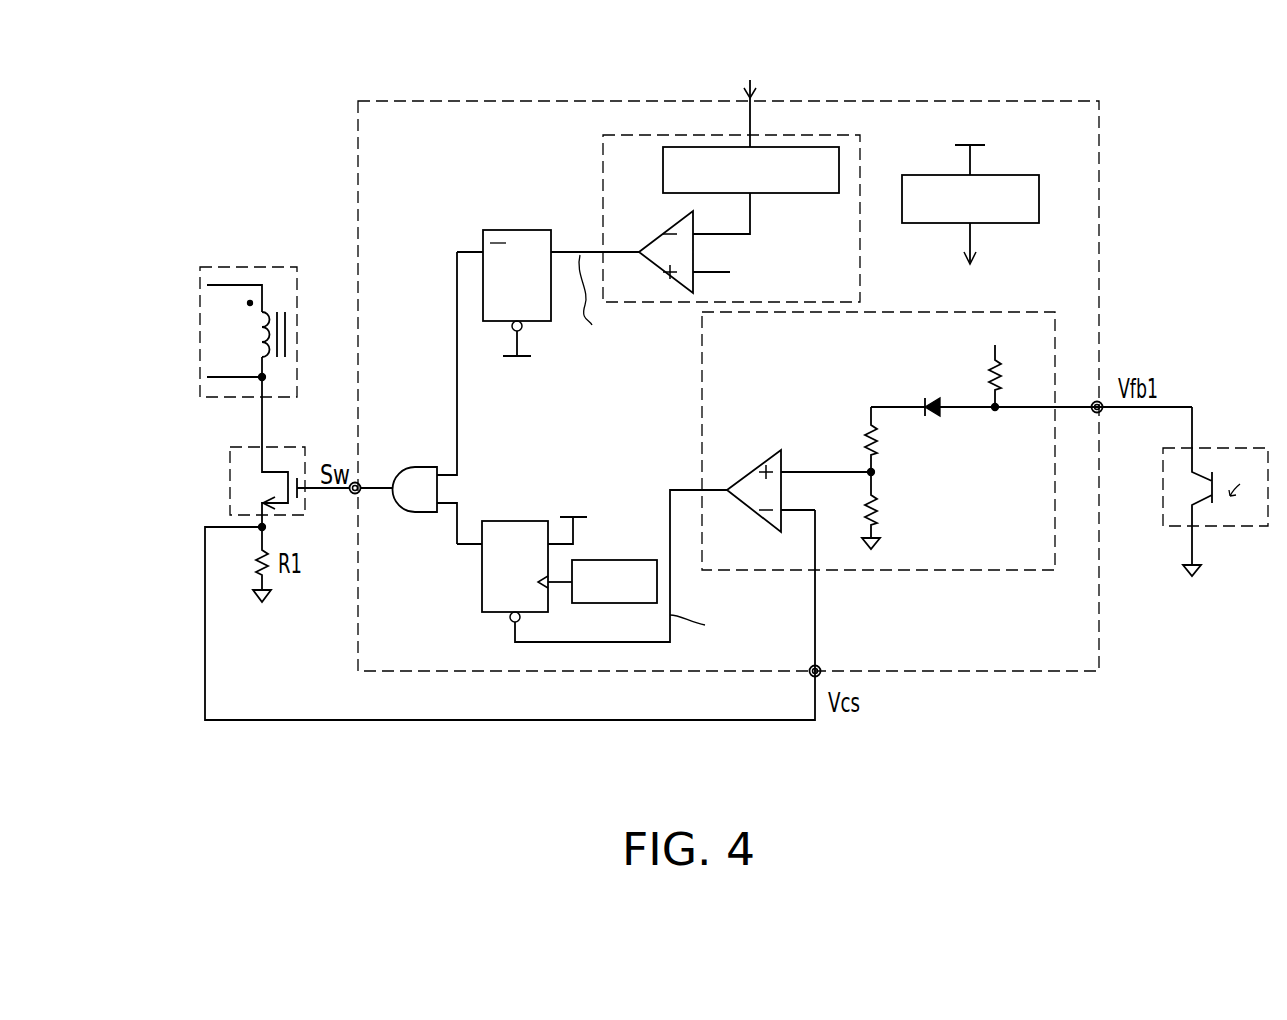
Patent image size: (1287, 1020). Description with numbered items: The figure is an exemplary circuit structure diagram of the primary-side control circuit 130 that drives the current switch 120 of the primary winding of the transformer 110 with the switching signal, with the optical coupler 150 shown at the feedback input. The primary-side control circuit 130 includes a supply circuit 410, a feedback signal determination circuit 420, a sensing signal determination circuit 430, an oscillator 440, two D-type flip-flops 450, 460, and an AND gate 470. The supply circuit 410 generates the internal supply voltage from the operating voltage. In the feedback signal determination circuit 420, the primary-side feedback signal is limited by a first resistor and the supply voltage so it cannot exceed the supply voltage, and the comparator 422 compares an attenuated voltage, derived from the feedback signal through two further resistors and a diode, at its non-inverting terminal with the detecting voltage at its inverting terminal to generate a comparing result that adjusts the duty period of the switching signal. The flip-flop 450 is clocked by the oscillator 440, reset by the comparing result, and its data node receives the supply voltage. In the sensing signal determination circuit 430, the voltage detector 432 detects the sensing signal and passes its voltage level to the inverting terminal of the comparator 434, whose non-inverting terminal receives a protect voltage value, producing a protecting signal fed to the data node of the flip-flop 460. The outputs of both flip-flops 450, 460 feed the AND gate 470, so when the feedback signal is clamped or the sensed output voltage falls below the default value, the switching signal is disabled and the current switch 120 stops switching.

The transformer 110 is at (200, 312).
The current switch 120 is at (228, 468).
The primary-side control circuit 130 is at (427, 100).
The optical coupler 150 is at (1243, 528).
The supply circuit 410 is at (1012, 175).
The feedback signal determination circuit 420 is at (945, 572).
The comparator 422 is at (753, 467).
The sensing signal determination circuit 430 is at (862, 270).
The voltage detector 432 is at (818, 195).
The comparator 434 is at (658, 226).
The oscillator 440 is at (622, 558).
The D-type flip-flop 450 is at (513, 521).
The D-type flip-flop 460 is at (515, 230).
The AND gate 470 is at (420, 467).